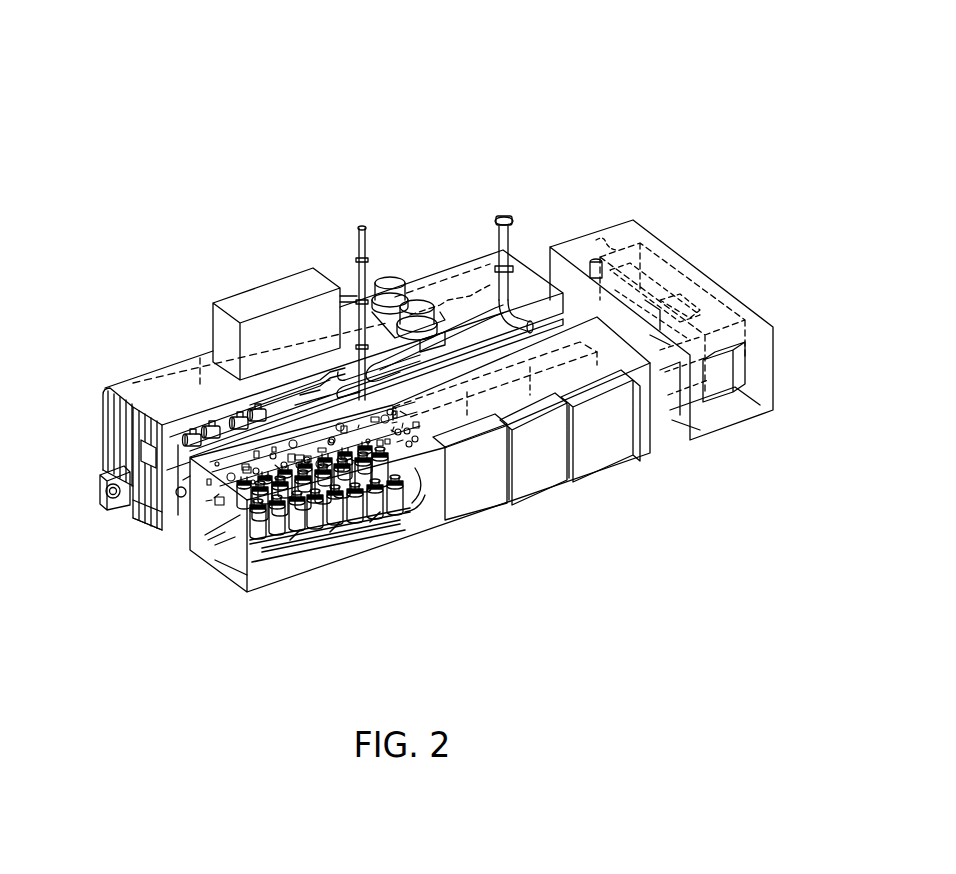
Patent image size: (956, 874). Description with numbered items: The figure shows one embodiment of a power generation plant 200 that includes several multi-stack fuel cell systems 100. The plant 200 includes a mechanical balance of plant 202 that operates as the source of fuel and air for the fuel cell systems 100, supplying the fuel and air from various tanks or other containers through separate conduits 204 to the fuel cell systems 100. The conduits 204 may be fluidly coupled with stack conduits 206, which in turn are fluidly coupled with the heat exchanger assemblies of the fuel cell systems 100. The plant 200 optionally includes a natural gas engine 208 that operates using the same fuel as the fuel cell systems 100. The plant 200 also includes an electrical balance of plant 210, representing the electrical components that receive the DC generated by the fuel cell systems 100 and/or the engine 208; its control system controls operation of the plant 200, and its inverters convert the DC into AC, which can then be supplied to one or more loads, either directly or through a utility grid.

The multi-stack fuel cell systems 100 is at (418, 468).
The power generation plant 200 is at (100, 628).
The mechanical balance of plant (MBOP) 202 is at (478, 186).
The conduits 204 is at (178, 422).
The stack conduits 206 is at (195, 548).
The natural gas engine 208 is at (640, 206).
The electrical balance of plant (EBOP) 210 is at (684, 466).